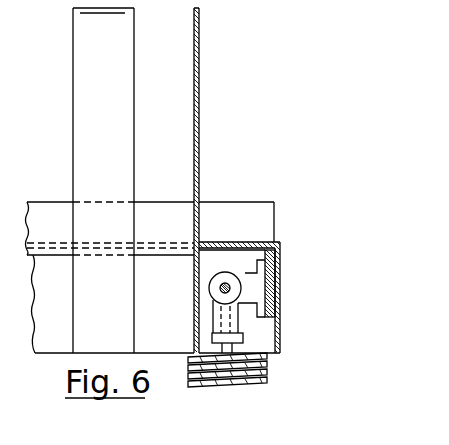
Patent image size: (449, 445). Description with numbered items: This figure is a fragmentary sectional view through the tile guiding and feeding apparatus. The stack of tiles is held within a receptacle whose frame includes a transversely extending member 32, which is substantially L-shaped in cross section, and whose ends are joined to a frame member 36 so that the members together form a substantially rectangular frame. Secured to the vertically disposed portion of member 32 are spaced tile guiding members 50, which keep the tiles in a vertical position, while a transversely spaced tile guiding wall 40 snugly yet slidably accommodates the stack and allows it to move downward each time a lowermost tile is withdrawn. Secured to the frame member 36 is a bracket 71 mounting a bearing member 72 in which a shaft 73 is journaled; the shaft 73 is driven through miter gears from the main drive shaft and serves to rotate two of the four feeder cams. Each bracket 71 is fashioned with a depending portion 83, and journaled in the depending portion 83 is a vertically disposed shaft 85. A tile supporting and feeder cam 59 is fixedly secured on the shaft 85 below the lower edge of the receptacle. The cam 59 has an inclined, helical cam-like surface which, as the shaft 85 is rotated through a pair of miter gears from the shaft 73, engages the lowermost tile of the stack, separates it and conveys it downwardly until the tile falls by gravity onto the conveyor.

The tile guiding member 50 is at (134, 27).
The tile guiding wall 40 is at (199, 37).
The transversely extending frame member 32 is at (178, 167).
The frame member 36 is at (278, 307).
The shaft 73 is at (268, 265).
The bracket 71 is at (250, 288).
The bearing member 72 is at (226, 272).
The depending portion 83 is at (244, 332).
The vertically disposed shaft 85 is at (235, 348).
The tile supporting and feeder cam 59 is at (255, 378).